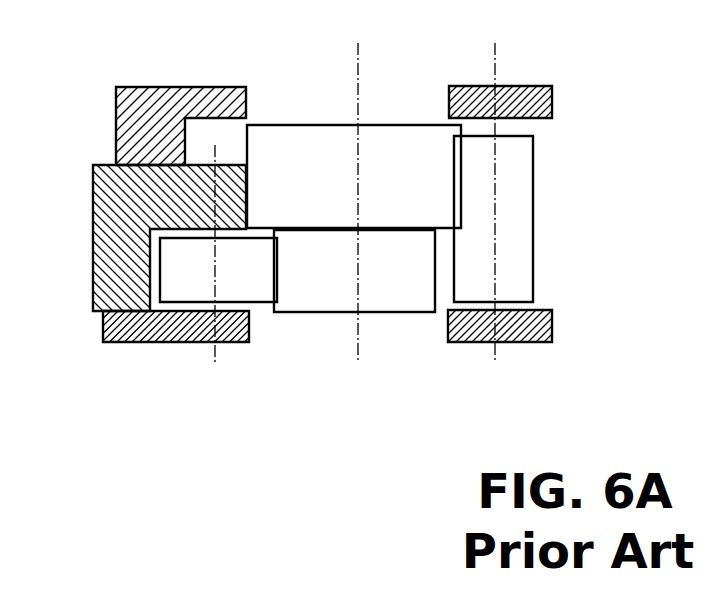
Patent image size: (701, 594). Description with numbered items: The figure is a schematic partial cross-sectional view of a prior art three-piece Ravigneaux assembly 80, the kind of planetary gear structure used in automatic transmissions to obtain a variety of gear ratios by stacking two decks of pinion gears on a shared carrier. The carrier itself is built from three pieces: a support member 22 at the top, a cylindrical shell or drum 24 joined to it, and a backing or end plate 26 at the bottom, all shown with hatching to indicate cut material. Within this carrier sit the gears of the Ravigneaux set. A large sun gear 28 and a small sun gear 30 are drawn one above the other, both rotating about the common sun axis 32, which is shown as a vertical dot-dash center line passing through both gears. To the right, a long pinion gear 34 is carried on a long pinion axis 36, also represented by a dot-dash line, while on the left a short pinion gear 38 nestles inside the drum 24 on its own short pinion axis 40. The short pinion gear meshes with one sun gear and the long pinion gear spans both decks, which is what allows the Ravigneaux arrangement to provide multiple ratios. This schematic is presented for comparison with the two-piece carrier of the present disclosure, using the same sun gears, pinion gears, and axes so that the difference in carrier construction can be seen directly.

The support member 22 is at (122, 97).
The cylindrical shell or drum 24 is at (102, 190).
The end plate 26 is at (107, 330).
The large sun gear 28 is at (377, 138).
The small sun gear 30 is at (412, 302).
The sun axis 32 is at (358, 55).
The long pinion gear 34 is at (525, 187).
The long pinion axis 36 is at (495, 55).
The short pinion gear 38 is at (256, 292).
The short pinion axis 40 is at (215, 345).
The prior art three-piece Ravigneaux assembly 80 is at (305, 90).